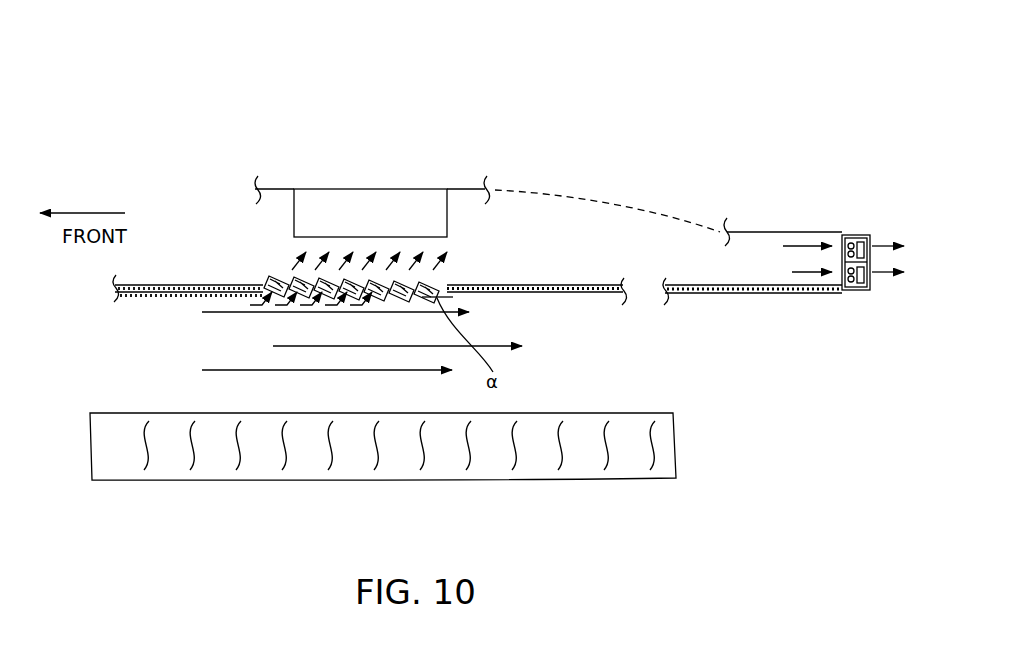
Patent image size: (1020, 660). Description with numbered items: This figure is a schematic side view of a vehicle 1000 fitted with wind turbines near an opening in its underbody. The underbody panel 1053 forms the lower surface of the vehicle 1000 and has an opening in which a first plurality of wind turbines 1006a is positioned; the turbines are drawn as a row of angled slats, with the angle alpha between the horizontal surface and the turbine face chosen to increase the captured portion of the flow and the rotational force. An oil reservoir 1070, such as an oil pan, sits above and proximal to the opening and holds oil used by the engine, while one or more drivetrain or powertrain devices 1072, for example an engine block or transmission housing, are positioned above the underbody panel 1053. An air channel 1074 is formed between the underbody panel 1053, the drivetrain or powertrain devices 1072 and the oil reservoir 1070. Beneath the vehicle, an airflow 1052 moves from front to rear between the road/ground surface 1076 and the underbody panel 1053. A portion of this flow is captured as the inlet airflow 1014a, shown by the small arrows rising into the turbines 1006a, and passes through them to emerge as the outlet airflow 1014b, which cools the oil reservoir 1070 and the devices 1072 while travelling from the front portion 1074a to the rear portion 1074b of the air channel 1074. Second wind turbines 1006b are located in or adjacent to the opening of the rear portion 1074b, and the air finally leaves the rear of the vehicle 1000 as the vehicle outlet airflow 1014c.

The vehicle 1000 is at (153, 100).
The drivetrain or powertrain devices 1072 is at (382, 176).
The front portion of the air channel 1074a is at (270, 211).
The oil reservoir 1070 is at (447, 215).
The underbody panel 1053 is at (160, 293).
The wind turbines 1006a is at (447, 286).
The outlet airflow 1014b is at (293, 267).
The inlet airflow 1014a is at (302, 306).
The airflow 1052 is at (307, 372).
The road/ground surface 1076 is at (582, 413).
The rear portion of the air channel 1074b is at (840, 210).
The air channel 1074 is at (745, 280).
The second wind turbines 1006b is at (855, 234).
The vehicle outlet airflow 1014c is at (880, 274).